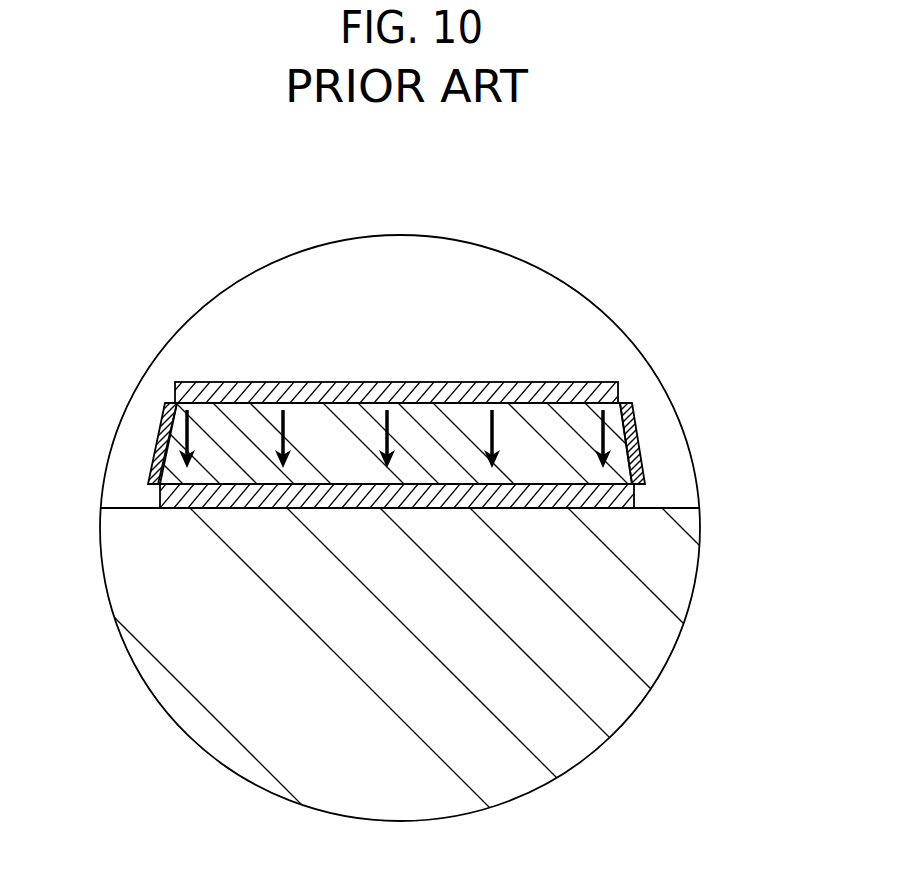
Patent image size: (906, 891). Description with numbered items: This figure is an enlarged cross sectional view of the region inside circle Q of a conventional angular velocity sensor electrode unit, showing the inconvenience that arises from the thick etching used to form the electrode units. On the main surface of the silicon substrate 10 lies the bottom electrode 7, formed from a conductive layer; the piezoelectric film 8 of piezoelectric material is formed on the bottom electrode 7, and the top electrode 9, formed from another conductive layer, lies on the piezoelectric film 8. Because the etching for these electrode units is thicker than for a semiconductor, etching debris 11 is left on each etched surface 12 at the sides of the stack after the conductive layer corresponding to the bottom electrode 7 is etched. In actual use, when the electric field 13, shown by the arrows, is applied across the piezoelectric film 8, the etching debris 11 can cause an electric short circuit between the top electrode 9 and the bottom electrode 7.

The bottom electrode 7 is at (167, 490).
The piezoelectric film 8 is at (237, 417).
The top electrode 9 is at (425, 390).
The silicon substrate 10 is at (653, 553).
The etching debris 11 is at (158, 445).
The etched surface 12 is at (175, 403).
The electric field 13 is at (380, 417).
The circle Q is at (630, 710).